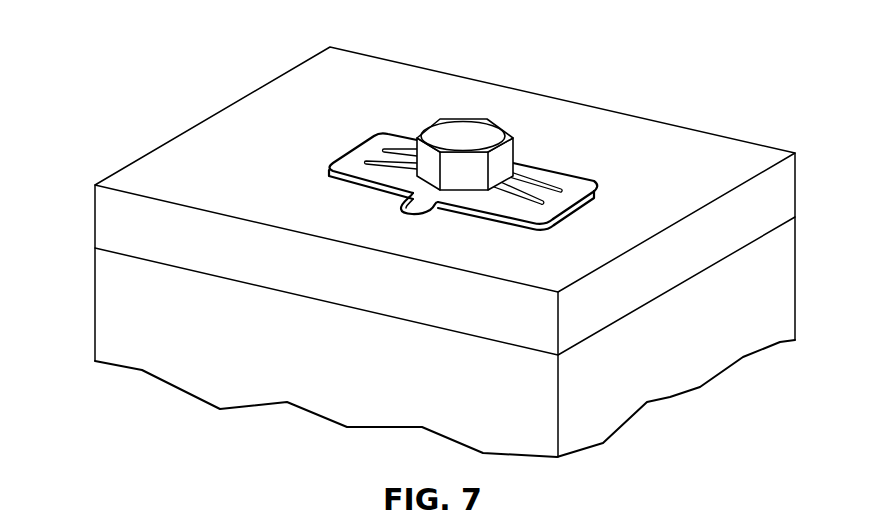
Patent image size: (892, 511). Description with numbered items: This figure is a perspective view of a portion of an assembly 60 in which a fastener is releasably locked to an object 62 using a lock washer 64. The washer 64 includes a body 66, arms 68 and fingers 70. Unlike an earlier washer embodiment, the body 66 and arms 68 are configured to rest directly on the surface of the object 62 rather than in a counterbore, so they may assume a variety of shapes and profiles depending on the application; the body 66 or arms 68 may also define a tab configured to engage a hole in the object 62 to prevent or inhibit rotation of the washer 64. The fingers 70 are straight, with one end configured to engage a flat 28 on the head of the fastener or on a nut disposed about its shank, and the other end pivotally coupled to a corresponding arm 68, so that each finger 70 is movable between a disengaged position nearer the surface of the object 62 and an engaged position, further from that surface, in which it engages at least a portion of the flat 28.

The assembly 60 is at (144, 146).
The object 62 is at (110, 228).
The lock washer 64 is at (340, 150).
The body 66 is at (447, 196).
The arms 68 is at (596, 181).
The fingers 70 is at (533, 188).
The flat 28 is at (504, 155).